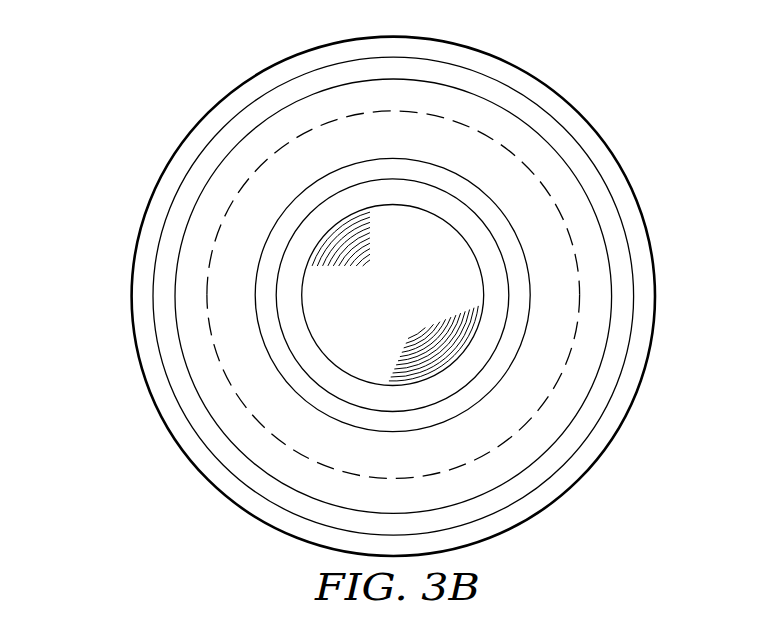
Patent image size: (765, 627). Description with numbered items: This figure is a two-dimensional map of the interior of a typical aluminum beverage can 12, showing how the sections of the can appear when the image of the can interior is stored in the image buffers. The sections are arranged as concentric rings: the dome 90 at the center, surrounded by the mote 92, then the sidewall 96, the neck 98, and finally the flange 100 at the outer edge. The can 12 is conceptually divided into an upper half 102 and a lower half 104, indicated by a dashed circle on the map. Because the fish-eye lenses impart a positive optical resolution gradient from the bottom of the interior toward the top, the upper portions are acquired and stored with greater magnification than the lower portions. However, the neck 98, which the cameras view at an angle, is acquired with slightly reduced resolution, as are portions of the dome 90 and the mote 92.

The beverage can 12 is at (542, 72).
The dome 90 is at (514, 327).
The mote 92 is at (490, 251).
The sidewall 96 is at (290, 294).
The neck 98 is at (454, 296).
The flange 100 is at (377, 284).
The upper half 102 is at (333, 404).
The lower half 104 is at (315, 258).